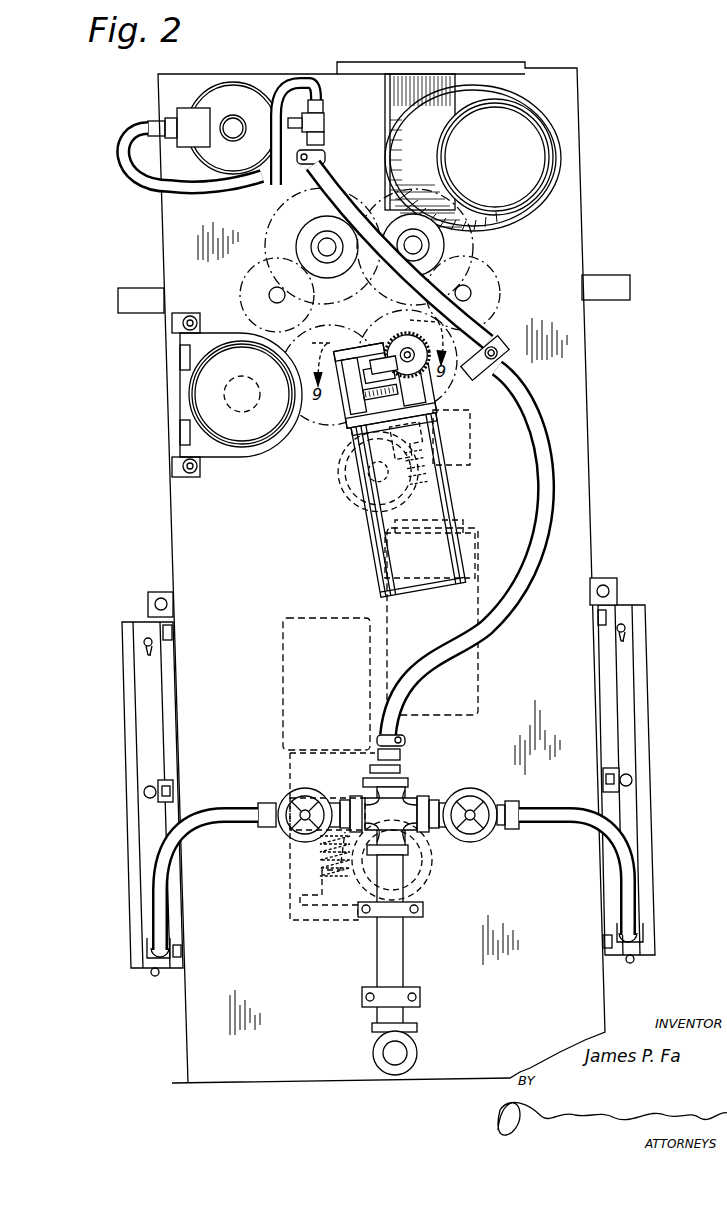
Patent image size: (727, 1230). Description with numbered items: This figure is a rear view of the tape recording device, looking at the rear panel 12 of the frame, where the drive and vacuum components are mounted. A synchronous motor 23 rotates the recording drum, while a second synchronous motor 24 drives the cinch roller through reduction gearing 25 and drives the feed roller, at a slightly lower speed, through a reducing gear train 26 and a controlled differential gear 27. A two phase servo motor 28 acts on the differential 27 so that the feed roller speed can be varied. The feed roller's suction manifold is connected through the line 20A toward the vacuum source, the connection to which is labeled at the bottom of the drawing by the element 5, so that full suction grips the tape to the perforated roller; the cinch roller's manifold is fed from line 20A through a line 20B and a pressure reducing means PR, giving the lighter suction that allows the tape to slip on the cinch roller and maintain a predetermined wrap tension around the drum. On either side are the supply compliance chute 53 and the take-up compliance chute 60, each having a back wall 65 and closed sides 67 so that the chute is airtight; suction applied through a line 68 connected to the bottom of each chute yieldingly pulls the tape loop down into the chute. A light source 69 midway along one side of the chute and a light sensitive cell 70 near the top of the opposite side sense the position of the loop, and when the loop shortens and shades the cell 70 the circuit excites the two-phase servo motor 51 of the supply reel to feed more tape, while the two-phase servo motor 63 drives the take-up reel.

The rear panel 12 is at (568, 233).
The pressure reducing means PR is at (229, 97).
The line 20B is at (150, 183).
The line (conduit) 20A is at (518, 605).
The synchronous motor 23 is at (533, 150).
The synchronous motor 24 is at (200, 396).
The reduction gearing 25 is at (260, 252).
The reducing gear train 26 is at (484, 253).
The controlled differential gear 27 is at (443, 385).
The two phase servo motor 28 is at (372, 522).
The two-phase servo motor 51 is at (482, 588).
The two-phase servo motor 63 is at (283, 688).
The supply compliance chute 53 is at (120, 722).
The take-up compliance chute 60 is at (655, 706).
The back wall 65 is at (142, 677).
The sides of the chute 67 is at (163, 742).
The light source 69 is at (144, 792).
The light sensitive cell 70 is at (143, 648).
The line 68 is at (218, 830).
The pipe elbow / valve manifold 5 is at (390, 1060).